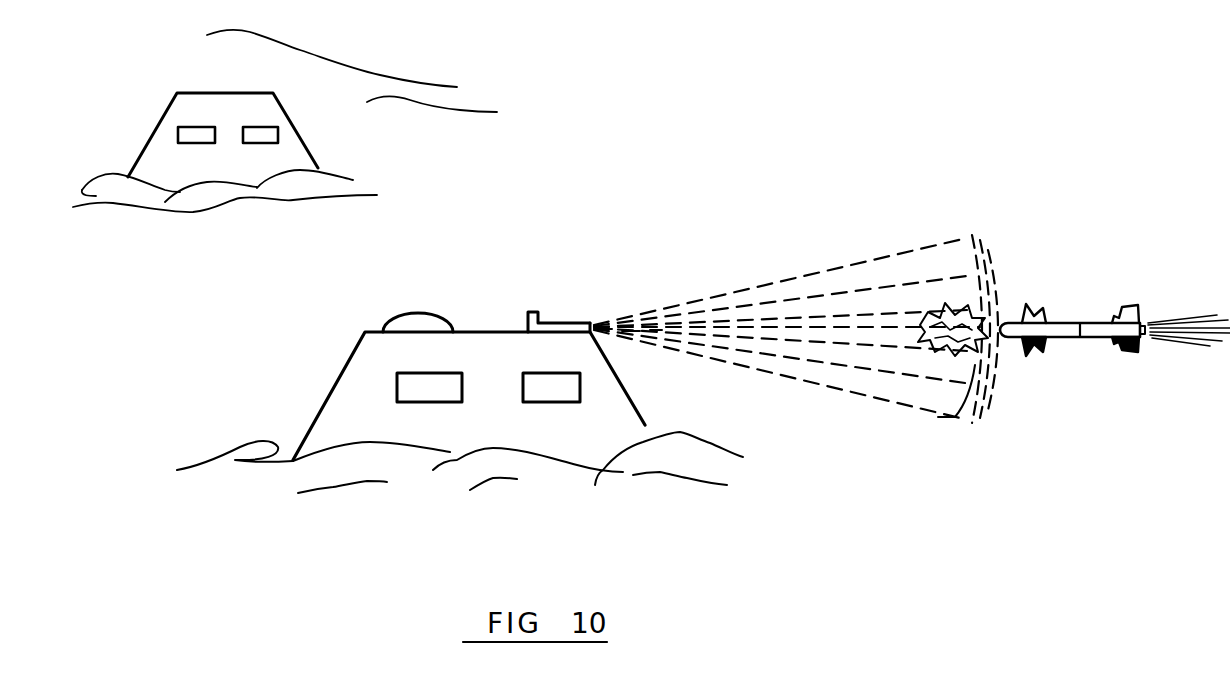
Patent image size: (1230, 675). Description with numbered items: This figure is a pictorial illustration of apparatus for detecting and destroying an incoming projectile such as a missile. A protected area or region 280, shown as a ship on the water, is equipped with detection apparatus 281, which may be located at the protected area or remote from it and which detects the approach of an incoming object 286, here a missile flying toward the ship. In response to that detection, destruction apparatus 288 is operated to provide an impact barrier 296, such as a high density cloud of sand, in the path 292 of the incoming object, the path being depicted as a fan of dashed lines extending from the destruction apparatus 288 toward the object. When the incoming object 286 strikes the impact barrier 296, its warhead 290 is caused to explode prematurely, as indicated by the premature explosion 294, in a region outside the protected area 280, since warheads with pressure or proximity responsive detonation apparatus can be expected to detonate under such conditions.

The protected area 280 is at (473, 343).
The detection apparatus 281 is at (538, 312).
The destruction apparatus 288 is at (592, 322).
The path 292 is at (795, 303).
The impact barrier 296 is at (908, 263).
The premature explosion 294 is at (952, 355).
The warhead 290 is at (1004, 315).
The incoming object 286 is at (1096, 318).